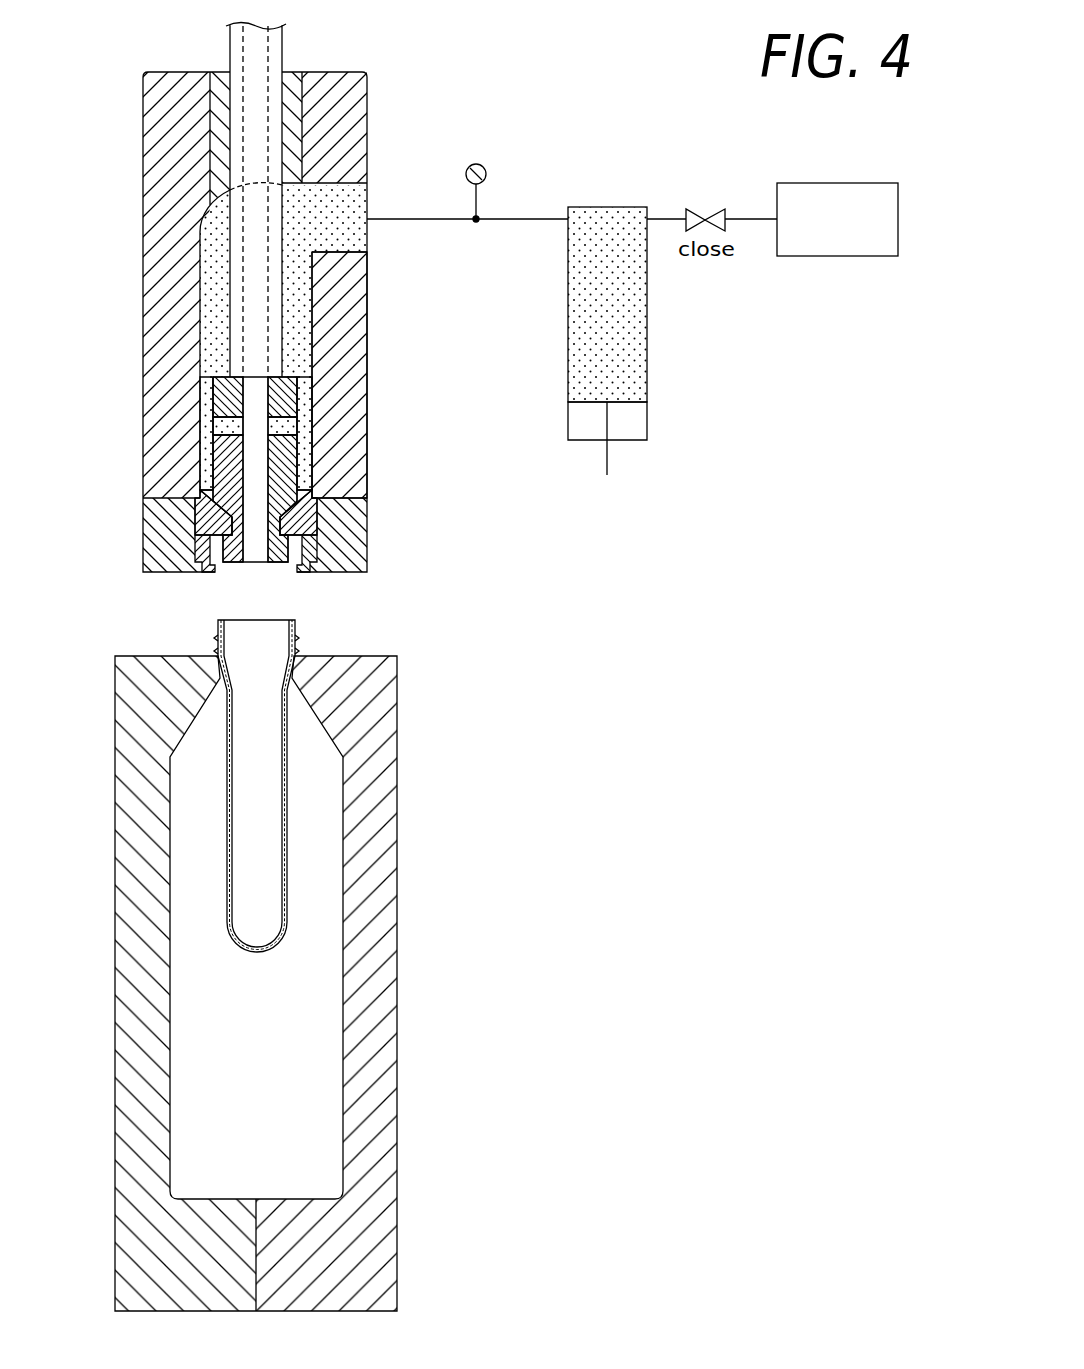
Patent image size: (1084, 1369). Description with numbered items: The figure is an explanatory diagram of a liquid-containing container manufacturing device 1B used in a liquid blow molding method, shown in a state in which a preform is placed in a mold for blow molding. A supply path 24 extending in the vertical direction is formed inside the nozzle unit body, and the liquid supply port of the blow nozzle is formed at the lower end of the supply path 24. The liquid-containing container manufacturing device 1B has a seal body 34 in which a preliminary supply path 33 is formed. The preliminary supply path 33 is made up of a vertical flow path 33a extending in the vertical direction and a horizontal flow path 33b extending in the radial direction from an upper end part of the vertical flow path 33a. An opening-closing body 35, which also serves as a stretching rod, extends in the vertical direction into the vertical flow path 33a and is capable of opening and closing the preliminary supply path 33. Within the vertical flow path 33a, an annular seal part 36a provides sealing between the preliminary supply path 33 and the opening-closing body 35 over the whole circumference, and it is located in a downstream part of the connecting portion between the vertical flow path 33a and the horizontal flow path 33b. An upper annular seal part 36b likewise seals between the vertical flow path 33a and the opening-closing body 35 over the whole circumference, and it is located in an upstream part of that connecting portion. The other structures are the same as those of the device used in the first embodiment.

The supply path 24 is at (311, 305).
The preliminary supply path 33 is at (304, 394).
The vertical flow path 33a is at (263, 462).
The horizontal flow path 33b is at (288, 432).
The seal body 34 is at (210, 453).
The opening-closing body 35 is at (241, 394).
The annular seal part 36a is at (272, 440).
The upper annular seal part 36b is at (285, 414).
The liquid-containing container manufacturing device 1B is at (624, 636).